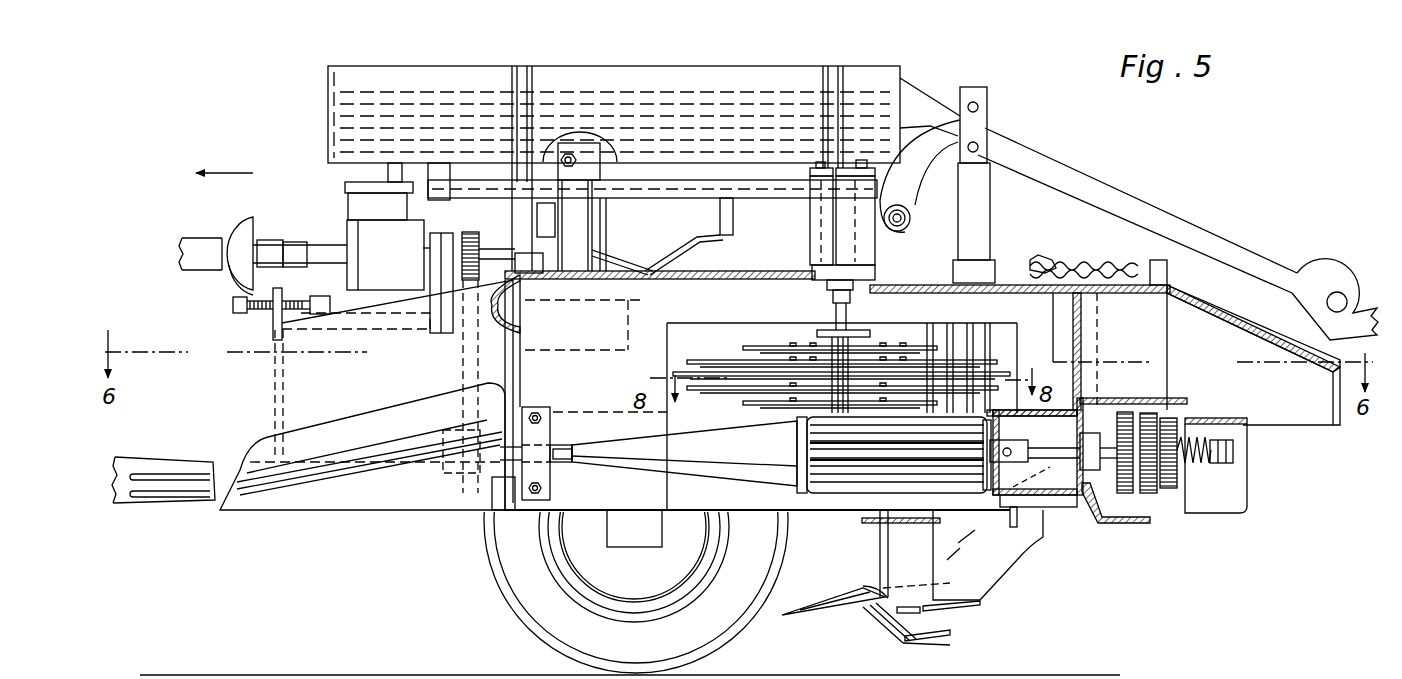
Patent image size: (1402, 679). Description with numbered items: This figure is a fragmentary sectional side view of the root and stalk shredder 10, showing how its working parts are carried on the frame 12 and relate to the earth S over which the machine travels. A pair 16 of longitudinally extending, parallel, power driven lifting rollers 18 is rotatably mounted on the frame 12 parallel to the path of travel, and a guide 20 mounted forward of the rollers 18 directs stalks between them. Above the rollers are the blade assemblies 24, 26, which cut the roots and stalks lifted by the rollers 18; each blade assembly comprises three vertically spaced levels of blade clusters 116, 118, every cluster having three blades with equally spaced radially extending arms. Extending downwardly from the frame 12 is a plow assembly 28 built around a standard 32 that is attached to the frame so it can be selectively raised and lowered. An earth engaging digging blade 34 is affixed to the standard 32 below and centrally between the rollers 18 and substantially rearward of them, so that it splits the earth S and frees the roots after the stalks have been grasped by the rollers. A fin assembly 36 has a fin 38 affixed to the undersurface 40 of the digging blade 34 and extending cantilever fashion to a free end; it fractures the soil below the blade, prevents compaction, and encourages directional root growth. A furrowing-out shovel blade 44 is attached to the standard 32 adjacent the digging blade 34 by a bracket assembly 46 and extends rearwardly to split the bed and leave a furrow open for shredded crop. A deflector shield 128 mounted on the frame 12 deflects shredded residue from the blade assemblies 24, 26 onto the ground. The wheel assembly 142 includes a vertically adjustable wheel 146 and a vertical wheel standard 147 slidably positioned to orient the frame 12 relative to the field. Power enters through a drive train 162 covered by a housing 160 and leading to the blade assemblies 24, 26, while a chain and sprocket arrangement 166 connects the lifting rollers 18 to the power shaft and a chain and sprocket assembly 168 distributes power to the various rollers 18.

The root and stalk shredder 10 is at (1128, 176).
The frame 12 is at (187, 509).
The pair of lifting rollers 16 is at (778, 500).
The lifting roller 18 is at (729, 450).
The guide 20 is at (297, 519).
The blade assembly 24 is at (695, 342).
The blade assembly 26 is at (841, 356).
The plow assembly 28 is at (822, 621).
The standard 32 is at (897, 550).
The digging blade 34 is at (866, 587).
The fin assembly 36 is at (919, 651).
The fin 38 is at (888, 628).
The undersurface of digging blade 40 is at (855, 605).
The furrowing-out shovel blade 44 is at (1012, 560).
The bracket assembly 46 is at (960, 613).
The blade cluster 116 is at (777, 340).
The blade cluster 118 is at (898, 350).
The deflector shield 128 is at (1279, 397).
The wheel assembly 142 is at (587, 521).
The wheel 146 is at (634, 527).
The wheel standard 147 is at (622, 535).
The housing 160 is at (648, 82).
The drive train 162 is at (752, 96).
The chain and sprocket arrangement 166 is at (485, 268).
The chain and sprocket assembly 168 is at (1159, 503).
The earth S is at (322, 673).